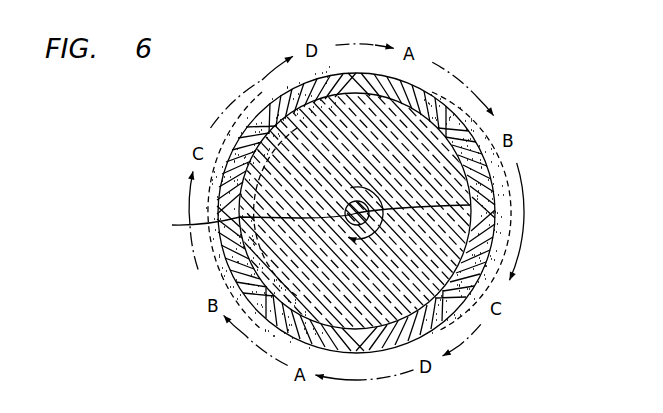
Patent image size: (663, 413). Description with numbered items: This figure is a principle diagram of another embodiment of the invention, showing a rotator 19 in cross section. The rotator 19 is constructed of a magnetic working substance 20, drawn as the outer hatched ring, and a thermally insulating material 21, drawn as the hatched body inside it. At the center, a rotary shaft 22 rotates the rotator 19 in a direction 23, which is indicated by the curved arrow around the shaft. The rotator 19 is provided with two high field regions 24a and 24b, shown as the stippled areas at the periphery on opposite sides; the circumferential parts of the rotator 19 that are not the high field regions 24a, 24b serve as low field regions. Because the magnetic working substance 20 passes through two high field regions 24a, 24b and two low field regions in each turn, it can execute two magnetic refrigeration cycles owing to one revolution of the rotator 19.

The rotator 19 is at (420, 92).
The magnetic working substance 20 is at (290, 96).
The thermally insulating material 21 is at (456, 246).
The rotary shaft 22 is at (308, 219).
The direction 23 is at (467, 205).
The high field region 24a is at (230, 130).
The high field region 24b is at (470, 110).